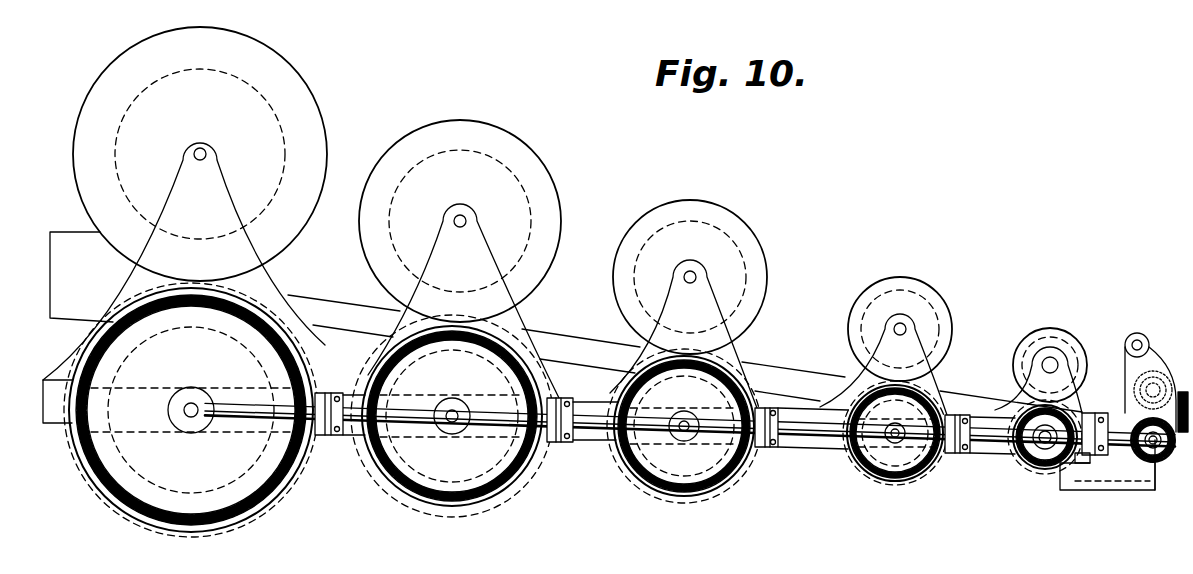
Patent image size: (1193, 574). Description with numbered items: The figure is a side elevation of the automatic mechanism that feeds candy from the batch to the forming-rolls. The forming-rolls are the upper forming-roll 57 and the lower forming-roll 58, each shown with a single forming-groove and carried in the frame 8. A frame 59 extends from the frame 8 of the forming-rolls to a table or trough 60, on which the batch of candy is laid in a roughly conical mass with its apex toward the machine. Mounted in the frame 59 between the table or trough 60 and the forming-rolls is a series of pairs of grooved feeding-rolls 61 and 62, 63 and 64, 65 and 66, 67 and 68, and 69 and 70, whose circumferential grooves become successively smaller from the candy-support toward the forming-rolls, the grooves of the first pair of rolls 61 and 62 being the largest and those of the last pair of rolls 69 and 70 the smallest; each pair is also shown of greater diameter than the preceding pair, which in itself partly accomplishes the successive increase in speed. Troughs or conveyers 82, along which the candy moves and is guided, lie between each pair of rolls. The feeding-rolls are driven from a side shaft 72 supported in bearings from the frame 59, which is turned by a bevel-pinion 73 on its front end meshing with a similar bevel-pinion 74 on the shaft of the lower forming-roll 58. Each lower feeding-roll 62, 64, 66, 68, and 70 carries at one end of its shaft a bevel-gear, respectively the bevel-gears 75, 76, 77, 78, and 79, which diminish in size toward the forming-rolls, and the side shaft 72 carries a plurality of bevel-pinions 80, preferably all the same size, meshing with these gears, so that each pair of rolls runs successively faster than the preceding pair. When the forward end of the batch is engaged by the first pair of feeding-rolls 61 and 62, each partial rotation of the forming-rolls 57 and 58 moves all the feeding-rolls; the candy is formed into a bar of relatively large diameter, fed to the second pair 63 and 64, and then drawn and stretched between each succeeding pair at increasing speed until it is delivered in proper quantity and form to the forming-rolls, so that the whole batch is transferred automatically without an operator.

The frame 8 is at (1117, 495).
The upper forming-roll 57 is at (1133, 390).
The lower forming-roll 58 is at (1127, 453).
The frame 59 is at (797, 443).
The table or trough 60 is at (65, 242).
The feeding-roll 61 is at (297, 88).
The feeding-roll 62 is at (203, 410).
The feeding-roll 63 is at (513, 143).
The feeding-roll 64 is at (452, 428).
The feeding-roll 65 is at (745, 236).
The feeding-roll 66 is at (684, 440).
The feeding-roll 67 is at (930, 283).
The feeding-roll 68 is at (892, 446).
The feeding-roll 69 is at (1057, 333).
The feeding-roll 70 is at (1084, 418).
The side shaft 72 is at (598, 430).
The bevel-pinion 73 is at (1177, 462).
The bevel-pinion 74 is at (1153, 487).
The bevel-gear 75 is at (267, 502).
The bevel-gear 76 is at (507, 495).
The bevel-gear 77 is at (713, 487).
The bevel-gear 78 is at (905, 473).
The bevel-gear 79 is at (1045, 470).
The bevel-pinions 80 is at (312, 396).
The troughs or conveyers 82 is at (583, 340).